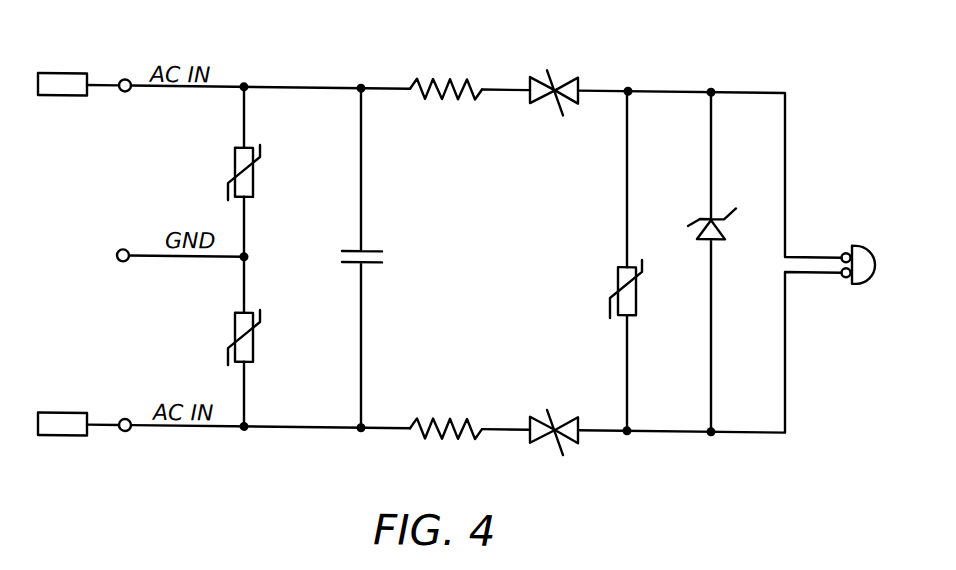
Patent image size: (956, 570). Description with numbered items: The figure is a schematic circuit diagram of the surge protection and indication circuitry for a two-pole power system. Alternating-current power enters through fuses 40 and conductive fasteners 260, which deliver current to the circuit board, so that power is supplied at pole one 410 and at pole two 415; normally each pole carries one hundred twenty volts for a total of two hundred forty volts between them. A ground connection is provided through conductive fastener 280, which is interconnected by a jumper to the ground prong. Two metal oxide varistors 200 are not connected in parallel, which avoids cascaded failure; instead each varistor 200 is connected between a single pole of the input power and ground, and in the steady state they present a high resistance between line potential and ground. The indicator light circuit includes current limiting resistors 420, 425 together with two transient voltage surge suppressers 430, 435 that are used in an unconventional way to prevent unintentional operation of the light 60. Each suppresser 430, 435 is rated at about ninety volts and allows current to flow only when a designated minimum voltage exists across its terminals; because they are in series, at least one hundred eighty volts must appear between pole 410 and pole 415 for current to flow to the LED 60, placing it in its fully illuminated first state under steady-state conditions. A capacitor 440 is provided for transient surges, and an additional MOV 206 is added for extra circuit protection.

The fuse 40 is at (60, 71).
The conductive fastener 260 is at (117, 78).
The conductive fastener 280 is at (117, 250).
The metal oxide varistor 200 is at (233, 169).
The MOV 206 is at (613, 283).
The pole one 410 is at (237, 79).
The pole two 415 is at (222, 428).
The current limiting resistor 420 is at (443, 75).
The current limiting resistor 425 is at (435, 435).
The transient voltage surge suppresser 430 is at (572, 74).
The transient voltage surge suppresser 435 is at (542, 437).
The capacitor 440 is at (385, 254).
The LED 60 is at (858, 235).